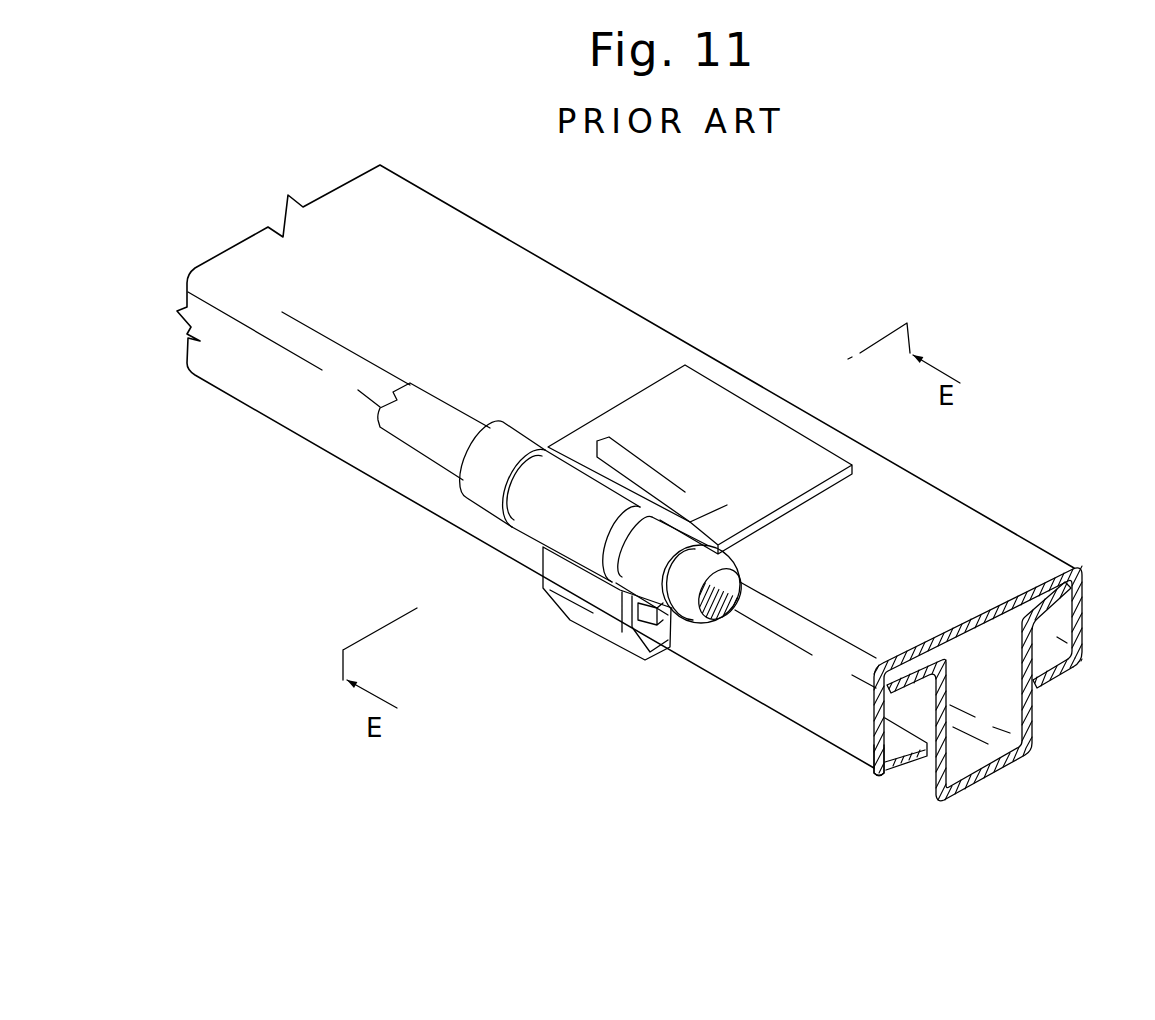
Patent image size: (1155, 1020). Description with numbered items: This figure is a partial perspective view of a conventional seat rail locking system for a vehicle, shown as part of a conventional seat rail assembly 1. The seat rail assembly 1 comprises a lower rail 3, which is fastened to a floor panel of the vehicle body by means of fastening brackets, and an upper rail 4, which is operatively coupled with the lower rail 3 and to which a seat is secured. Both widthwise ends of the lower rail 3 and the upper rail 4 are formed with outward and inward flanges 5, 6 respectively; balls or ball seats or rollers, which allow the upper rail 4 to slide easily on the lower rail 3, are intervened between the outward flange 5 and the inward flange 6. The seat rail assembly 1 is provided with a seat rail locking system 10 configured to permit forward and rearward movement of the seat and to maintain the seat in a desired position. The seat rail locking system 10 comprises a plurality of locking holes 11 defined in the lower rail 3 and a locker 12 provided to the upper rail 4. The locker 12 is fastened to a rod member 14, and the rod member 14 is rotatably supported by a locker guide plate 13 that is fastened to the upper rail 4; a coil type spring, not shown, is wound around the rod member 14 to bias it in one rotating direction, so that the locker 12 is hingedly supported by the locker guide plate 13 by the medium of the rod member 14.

The seat rail assembly 1 is at (754, 300).
The lower rail 3 is at (1023, 748).
The upper rail 4 is at (990, 530).
The outward flange 5 is at (1050, 608).
The inward flange 6 is at (885, 775).
The seat rail locking system 10 is at (525, 593).
The locking hole 11 is at (915, 773).
The locker 12 is at (603, 647).
The locker guide plate 13 is at (733, 407).
The rod member 14 is at (730, 614).